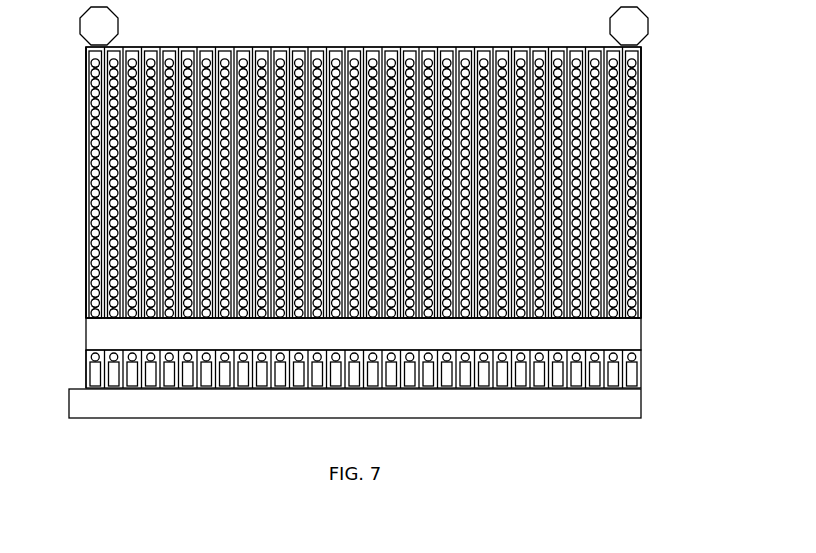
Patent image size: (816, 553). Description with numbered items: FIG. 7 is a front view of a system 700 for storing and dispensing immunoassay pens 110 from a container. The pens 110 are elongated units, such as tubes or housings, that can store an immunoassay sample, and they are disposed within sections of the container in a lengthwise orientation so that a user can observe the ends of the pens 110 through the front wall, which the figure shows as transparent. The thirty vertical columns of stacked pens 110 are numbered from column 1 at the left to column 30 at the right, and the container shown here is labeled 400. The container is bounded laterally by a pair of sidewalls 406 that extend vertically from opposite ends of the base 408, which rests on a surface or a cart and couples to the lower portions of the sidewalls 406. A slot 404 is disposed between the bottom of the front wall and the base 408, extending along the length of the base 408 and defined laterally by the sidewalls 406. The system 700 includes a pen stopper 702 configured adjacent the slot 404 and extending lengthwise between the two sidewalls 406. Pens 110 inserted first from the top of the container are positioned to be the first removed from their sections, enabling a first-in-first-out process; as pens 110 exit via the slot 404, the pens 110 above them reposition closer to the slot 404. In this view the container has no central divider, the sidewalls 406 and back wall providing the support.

The system for storing and dispensing immunoassay 700 is at (678, 72).
The pens 110 is at (638, 125).
The pen holder 400 is at (645, 172).
The sidewalls 406 is at (641, 205).
The pen stopper 702 is at (625, 343).
The slot 404 is at (108, 388).
The base 408 is at (186, 403).
The column 1 is at (99, 26).
The column 30 is at (629, 26).